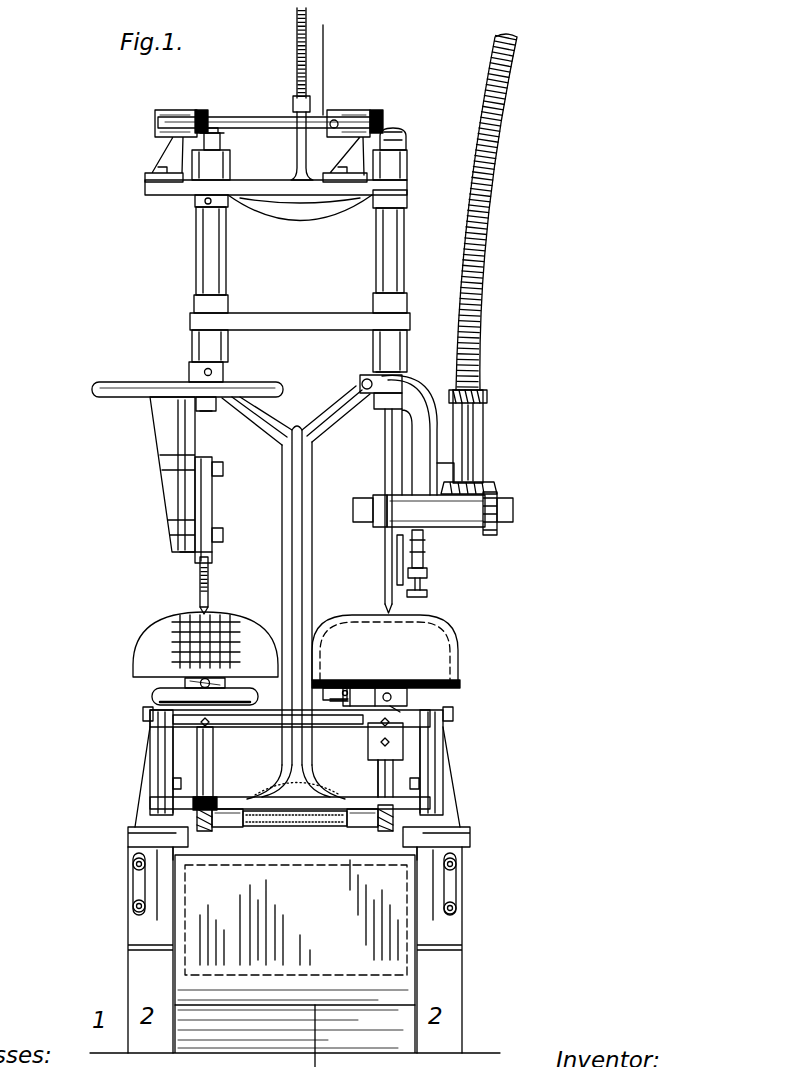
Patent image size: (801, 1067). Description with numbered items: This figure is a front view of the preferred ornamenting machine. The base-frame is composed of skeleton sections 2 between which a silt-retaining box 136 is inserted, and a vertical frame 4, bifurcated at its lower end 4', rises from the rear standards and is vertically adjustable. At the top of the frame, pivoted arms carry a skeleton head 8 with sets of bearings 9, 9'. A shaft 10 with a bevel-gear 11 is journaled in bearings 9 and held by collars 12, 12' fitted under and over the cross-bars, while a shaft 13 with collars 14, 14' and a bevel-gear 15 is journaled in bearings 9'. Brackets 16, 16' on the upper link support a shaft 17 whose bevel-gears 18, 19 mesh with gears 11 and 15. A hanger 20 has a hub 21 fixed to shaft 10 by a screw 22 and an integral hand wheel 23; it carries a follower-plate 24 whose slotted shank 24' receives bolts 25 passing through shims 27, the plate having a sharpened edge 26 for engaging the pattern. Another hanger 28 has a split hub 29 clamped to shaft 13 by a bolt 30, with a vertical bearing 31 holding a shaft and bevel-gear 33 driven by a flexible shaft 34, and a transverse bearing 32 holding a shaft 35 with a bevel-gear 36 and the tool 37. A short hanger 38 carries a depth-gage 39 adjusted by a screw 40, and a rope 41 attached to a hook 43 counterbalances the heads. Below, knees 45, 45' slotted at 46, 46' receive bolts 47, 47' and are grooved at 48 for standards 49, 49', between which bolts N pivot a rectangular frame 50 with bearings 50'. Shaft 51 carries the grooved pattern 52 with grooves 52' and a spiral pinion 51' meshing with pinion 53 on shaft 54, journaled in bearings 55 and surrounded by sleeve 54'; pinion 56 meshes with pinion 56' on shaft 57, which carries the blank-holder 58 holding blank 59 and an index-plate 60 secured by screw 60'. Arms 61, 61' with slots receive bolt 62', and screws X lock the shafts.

The skeleton section 2 is at (333, 67).
The vertical frame 4 is at (309, 597).
The bifurcated lower end 4' is at (296, 782).
The vertical head 8 is at (375, 231).
The bearings 9 is at (221, 256).
The bearings 9' is at (405, 258).
The shaft 10 is at (197, 260).
The bevel-gear 11 is at (222, 138).
The collar 12 is at (175, 209).
The collar 12' is at (237, 297).
The shaft 13 is at (383, 263).
The collar 14 is at (413, 189).
The collar 14' is at (412, 289).
The bevel-gear 15 is at (406, 133).
The bracket 16 is at (171, 131).
The bracket 16' is at (363, 120).
The shaft 17 is at (268, 120).
The bevel-gear 18 is at (207, 103).
The bevel-gear 19 is at (385, 110).
The hanger 20 is at (160, 438).
The hub 21 is at (224, 372).
The screw 22 is at (192, 372).
The hand wheel 23 is at (125, 391).
The follower-plate 24 is at (228, 582).
The slotted shank 24' is at (230, 510).
The bolt 25 is at (224, 468).
The sharpened edge 26 is at (210, 608).
The shim 27 is at (200, 555).
The hanger 28 is at (445, 427).
The split hub 29 is at (372, 406).
The bolt 30 is at (362, 385).
The vertical bearing 31 is at (483, 448).
The transverse bearing 32 is at (458, 528).
The bevel-gear 33 is at (490, 482).
The flexible shaft 34 is at (481, 333).
The shaft 35 is at (515, 510).
The bevel-gear 36 is at (498, 530).
The tool 37 is at (384, 470).
The short hanger 38 is at (428, 570).
The depth-gage 39 is at (398, 606).
The screw 40 is at (430, 593).
The rope 41 is at (300, 44).
The hook 43 is at (297, 138).
The knee 45 is at (118, 950).
The knee 45' is at (479, 950).
The slot 46 is at (104, 884).
The slot 46' is at (483, 884).
The bolt 47 is at (111, 888).
The bolt 47' is at (513, 880).
The groove 48 is at (128, 838).
The standard 49 is at (131, 777).
The standard 49' is at (472, 777).
The skeleton frame 50 is at (290, 759).
The bearings 50' is at (225, 757).
The shaft 51 is at (135, 785).
The spiral pinion 51' is at (101, 828).
The pattern 52 is at (178, 650).
The grooves 52' is at (155, 703).
The pinion 53 is at (212, 830).
The shaft 54 is at (295, 831).
The sleeve 54' is at (282, 862).
The bearings 55 is at (262, 828).
The spiral pinion 56 is at (369, 832).
The pinion 56' is at (473, 795).
The shaft 57 is at (395, 770).
The blank-holder 58 is at (462, 683).
The blank 59 is at (456, 643).
The index-plate 60 is at (406, 698).
The screw 60' is at (413, 676).
The arm 61 is at (134, 761).
The arm 61' is at (469, 761).
The bolt 62' is at (323, 785).
The silt-retaining box 136 is at (295, 951).
The bolt N is at (143, 713).
The screw X is at (458, 681).